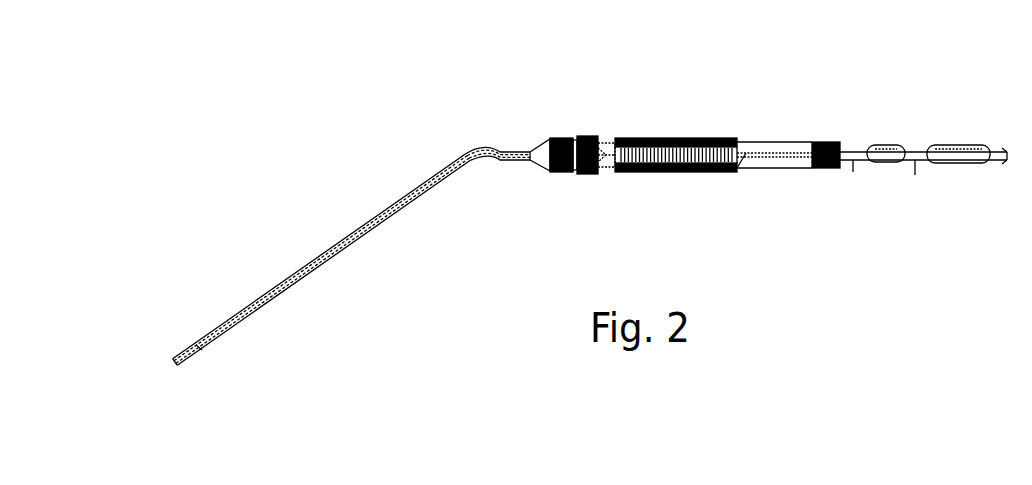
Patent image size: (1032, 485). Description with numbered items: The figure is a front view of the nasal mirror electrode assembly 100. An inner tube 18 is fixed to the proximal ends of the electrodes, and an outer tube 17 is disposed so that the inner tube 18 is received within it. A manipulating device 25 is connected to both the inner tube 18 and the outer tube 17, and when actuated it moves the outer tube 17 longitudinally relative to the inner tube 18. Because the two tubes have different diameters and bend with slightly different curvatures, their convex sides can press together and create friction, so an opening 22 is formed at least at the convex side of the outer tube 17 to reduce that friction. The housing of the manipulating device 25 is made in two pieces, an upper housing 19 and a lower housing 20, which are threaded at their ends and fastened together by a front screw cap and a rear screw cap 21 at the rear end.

The outer tube 17 is at (210, 334).
The inner tube 18 is at (410, 195).
The upper housing 19 is at (612, 150).
The lower housing 20 is at (767, 153).
The rear screw cap 21 is at (845, 148).
The opening 22 is at (466, 157).
The manipulating device 25 is at (742, 154).
The nasal mirror electrode assembly 100 is at (768, 190).